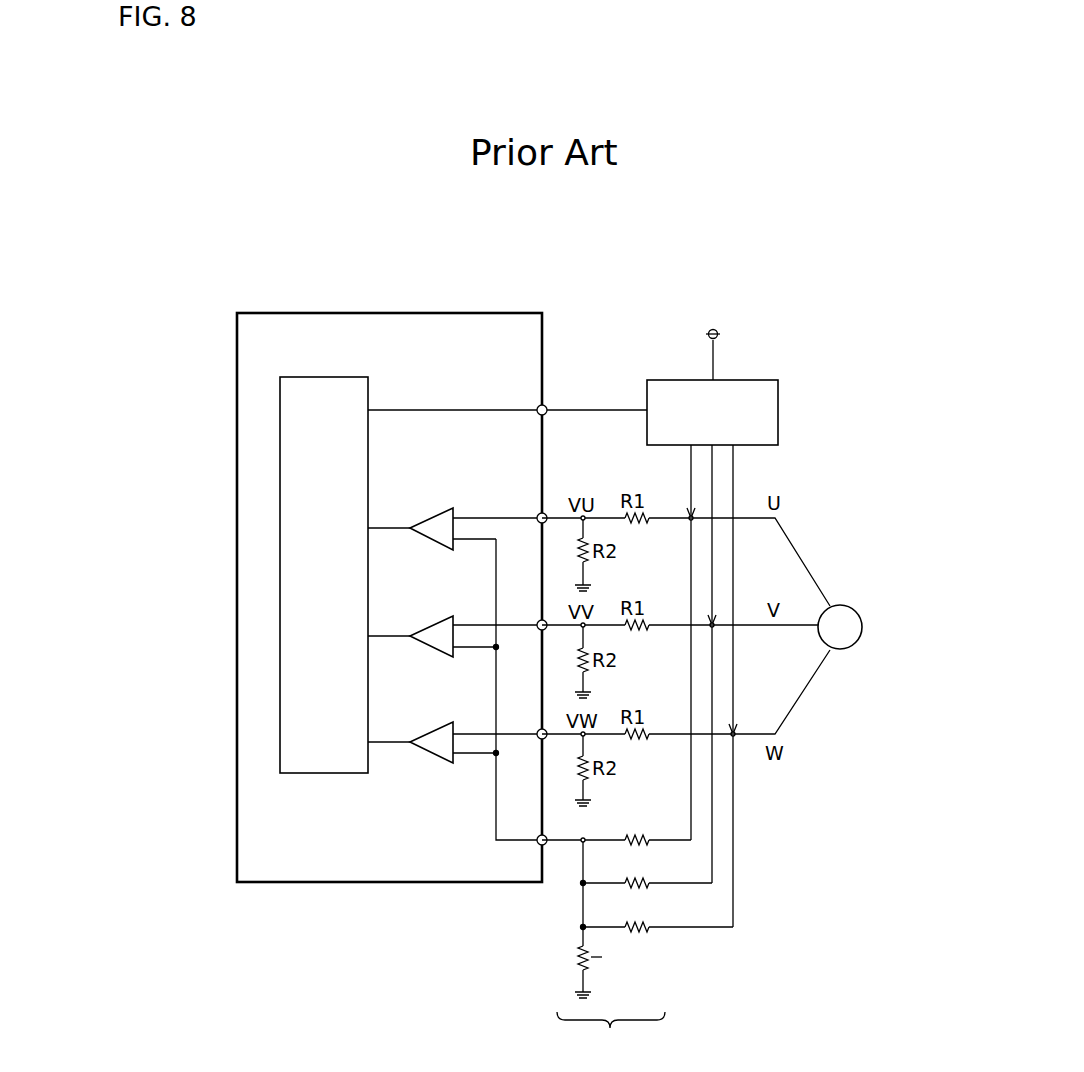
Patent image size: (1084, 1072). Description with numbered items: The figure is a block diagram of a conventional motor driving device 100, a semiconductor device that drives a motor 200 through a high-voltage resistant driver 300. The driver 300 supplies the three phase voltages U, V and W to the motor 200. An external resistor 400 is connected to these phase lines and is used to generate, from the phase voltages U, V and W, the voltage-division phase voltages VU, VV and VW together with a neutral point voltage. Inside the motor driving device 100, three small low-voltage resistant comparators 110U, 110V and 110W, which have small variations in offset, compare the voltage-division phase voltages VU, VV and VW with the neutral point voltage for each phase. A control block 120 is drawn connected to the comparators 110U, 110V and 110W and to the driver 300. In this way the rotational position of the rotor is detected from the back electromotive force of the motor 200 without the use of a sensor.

The motor driving device 100 is at (390, 313).
The controller 120 is at (327, 377).
The comparator 110U is at (432, 516).
The comparator 110V is at (432, 624).
The comparator 110W is at (432, 730).
The high-voltage resistant driver 300 is at (740, 380).
The motor 200 is at (854, 605).
The external resistor 400 is at (630, 1059).